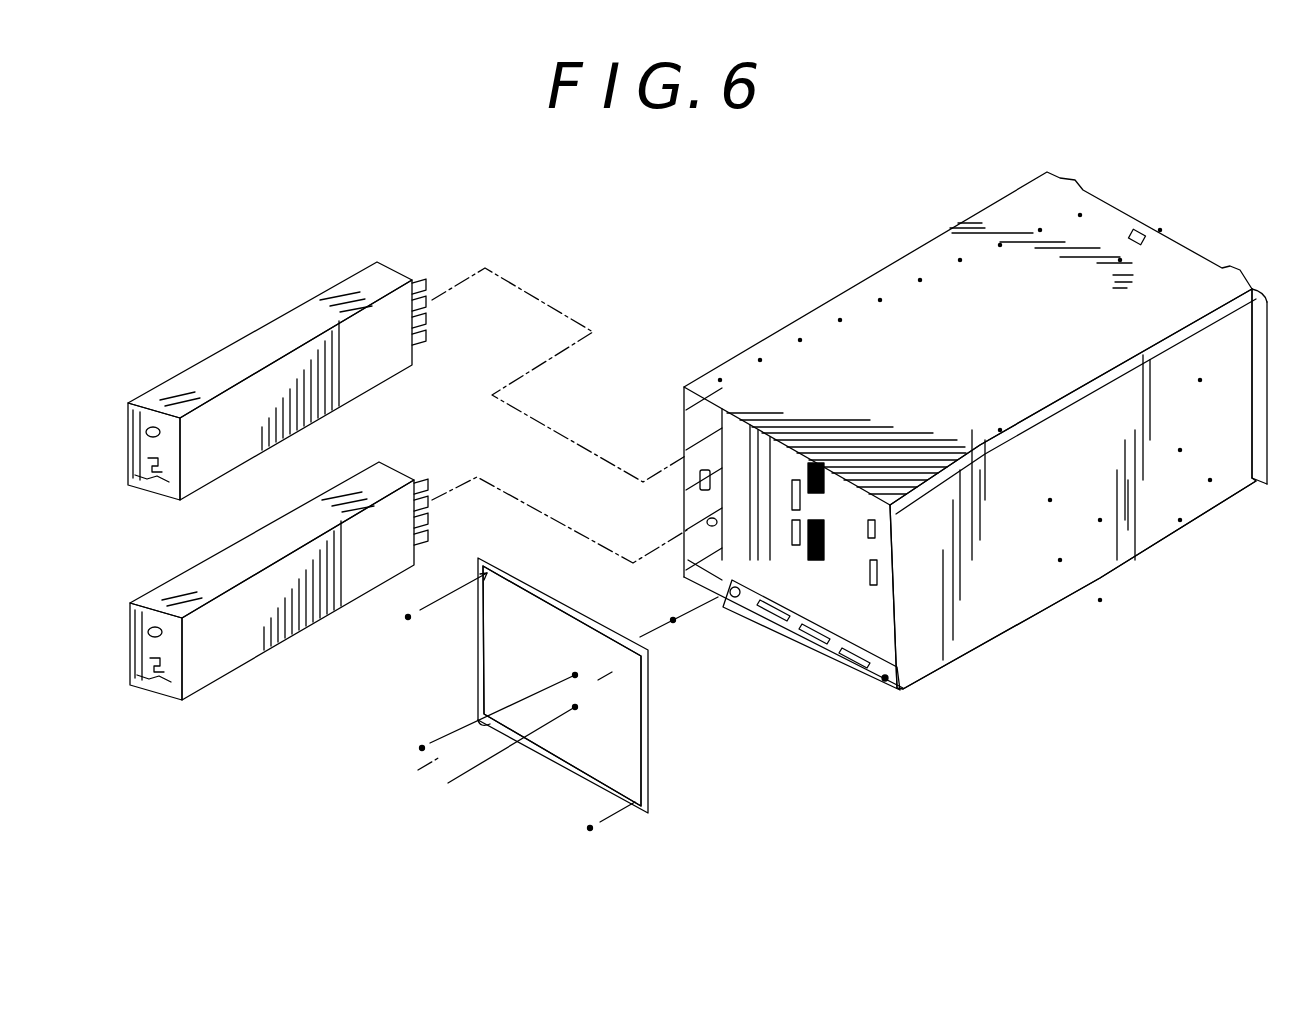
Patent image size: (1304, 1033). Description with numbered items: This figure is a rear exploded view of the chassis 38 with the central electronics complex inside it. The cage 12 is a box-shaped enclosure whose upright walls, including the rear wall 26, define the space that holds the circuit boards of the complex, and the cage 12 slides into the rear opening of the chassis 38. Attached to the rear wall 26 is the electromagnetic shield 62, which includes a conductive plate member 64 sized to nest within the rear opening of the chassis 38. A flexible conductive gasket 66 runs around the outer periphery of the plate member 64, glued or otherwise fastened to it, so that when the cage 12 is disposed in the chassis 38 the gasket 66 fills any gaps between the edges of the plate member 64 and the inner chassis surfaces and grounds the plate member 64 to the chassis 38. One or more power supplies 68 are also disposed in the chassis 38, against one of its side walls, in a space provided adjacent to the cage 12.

The cage 12 is at (903, 688).
The rear wall 26 is at (845, 610).
The chassis 38 is at (1157, 543).
The electromagnetic shield 62 is at (668, 778).
The conductive plate member 64 is at (495, 661).
The flexible conductive gasket 66 is at (548, 592).
The power supplies 68 is at (207, 357).